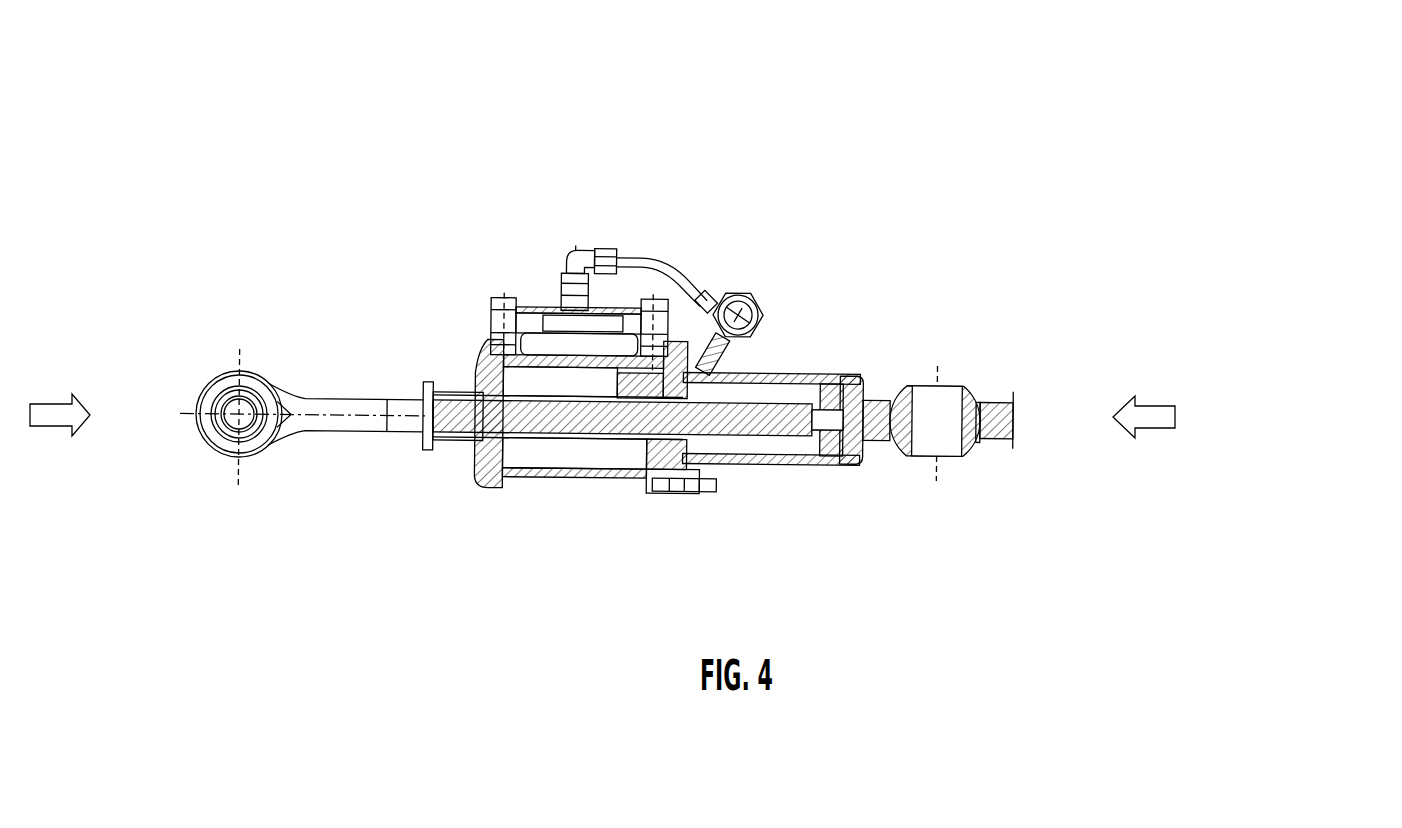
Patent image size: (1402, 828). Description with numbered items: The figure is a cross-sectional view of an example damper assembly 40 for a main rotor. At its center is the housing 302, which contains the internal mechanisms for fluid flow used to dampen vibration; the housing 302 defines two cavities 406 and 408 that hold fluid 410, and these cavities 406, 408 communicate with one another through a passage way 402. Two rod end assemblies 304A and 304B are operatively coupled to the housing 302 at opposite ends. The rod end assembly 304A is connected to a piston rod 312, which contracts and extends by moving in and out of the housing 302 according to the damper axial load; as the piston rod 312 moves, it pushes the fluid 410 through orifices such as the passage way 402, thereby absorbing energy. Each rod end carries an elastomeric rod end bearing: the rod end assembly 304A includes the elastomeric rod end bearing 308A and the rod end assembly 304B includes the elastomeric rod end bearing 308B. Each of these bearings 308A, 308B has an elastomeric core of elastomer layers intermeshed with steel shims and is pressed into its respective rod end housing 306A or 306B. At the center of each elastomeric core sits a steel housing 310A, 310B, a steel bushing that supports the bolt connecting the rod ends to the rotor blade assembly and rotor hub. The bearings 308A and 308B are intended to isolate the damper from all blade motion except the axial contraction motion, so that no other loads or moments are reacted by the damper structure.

The damper assembly 40 is at (628, 116).
The housing 302 is at (783, 373).
The rod end assembly 304A is at (172, 363).
The rod end assembly 304B is at (1050, 405).
The rod end housing 306A is at (202, 437).
The rod end housing 306B is at (972, 448).
The elastomeric rod end bearing 308A is at (253, 392).
The elastomeric rod end bearing 308B is at (970, 390).
The steel housing 310A is at (228, 398).
The steel housing 310B is at (922, 392).
The piston rod 312 is at (583, 418).
The passage way 402 is at (677, 267).
The cavity 406 is at (609, 483).
The cavity 408 is at (762, 466).
The fluid 410 is at (522, 378).